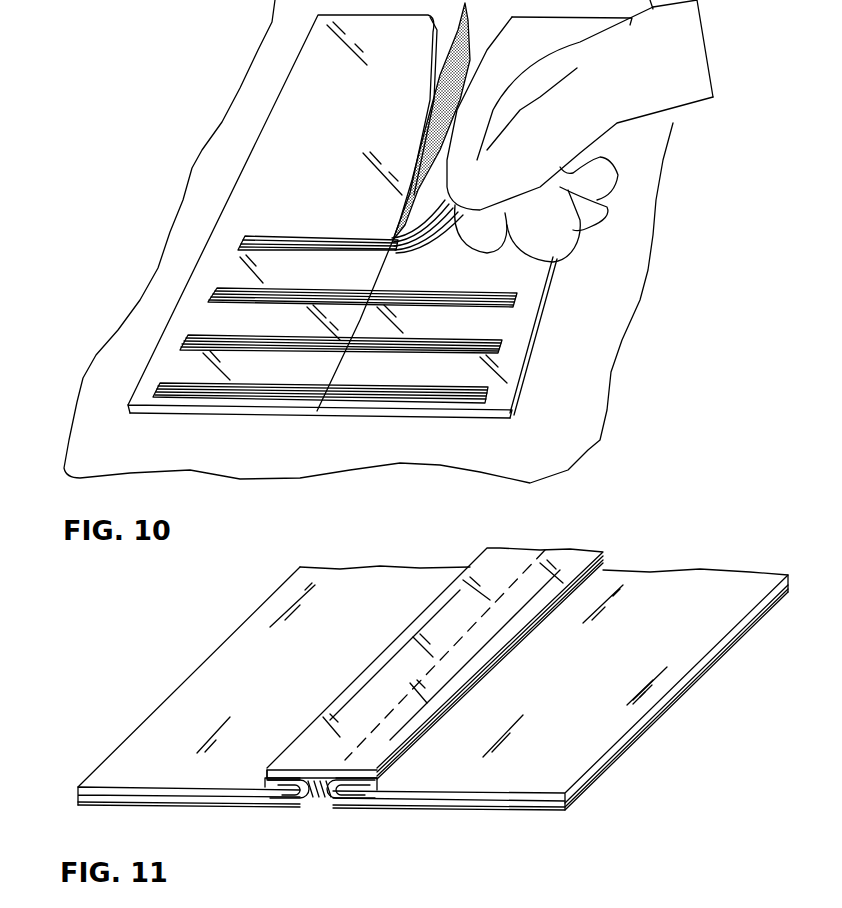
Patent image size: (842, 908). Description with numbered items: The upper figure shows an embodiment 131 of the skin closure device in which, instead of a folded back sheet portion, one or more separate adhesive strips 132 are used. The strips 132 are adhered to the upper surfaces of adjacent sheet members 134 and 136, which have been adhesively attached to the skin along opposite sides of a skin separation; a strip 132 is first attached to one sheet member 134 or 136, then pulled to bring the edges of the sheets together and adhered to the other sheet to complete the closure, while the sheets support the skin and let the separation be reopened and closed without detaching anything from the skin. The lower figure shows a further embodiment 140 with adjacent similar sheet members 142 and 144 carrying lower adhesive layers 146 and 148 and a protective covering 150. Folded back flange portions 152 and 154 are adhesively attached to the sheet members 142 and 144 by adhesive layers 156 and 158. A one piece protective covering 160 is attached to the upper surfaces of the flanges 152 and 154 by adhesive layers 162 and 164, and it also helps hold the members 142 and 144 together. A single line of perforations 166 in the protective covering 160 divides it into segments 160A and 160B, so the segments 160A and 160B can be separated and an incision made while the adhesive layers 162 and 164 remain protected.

In FIG. 10, the embodiment 131 is at (222, 70).
In FIG. 10, the adhesive strips 132 is at (260, 236).
In FIG. 10, the sheet member 134 is at (405, 412).
In FIG. 10, the sheet member 136 is at (203, 410).
In FIG. 11, the embodiment 140 is at (402, 673).
In FIG. 11, the sheet member 142 is at (550, 798).
In FIG. 11, the sheet member 144 is at (218, 793).
In FIG. 11, the lower adhesive layer 146 is at (533, 808).
In FIG. 11, the lower adhesive layer 148 is at (100, 797).
In FIG. 11, the protective covering 150 is at (413, 805).
In FIG. 11, the folded back flange portion 152 is at (367, 784).
In FIG. 11, the folded back flange portion 154 is at (277, 782).
In FIG. 11, the adhesive layer 156 is at (342, 798).
In FIG. 11, the adhesive layer 158 is at (298, 798).
In FIG. 11, the protective covering 160 is at (417, 617).
In FIG. 11, the segment 160A is at (528, 570).
In FIG. 11, the segment 160B is at (563, 565).
In FIG. 11, the adhesive layer 162 is at (367, 770).
In FIG. 11, the adhesive layer 164 is at (295, 778).
In FIG. 11, the perforations 166 is at (510, 578).